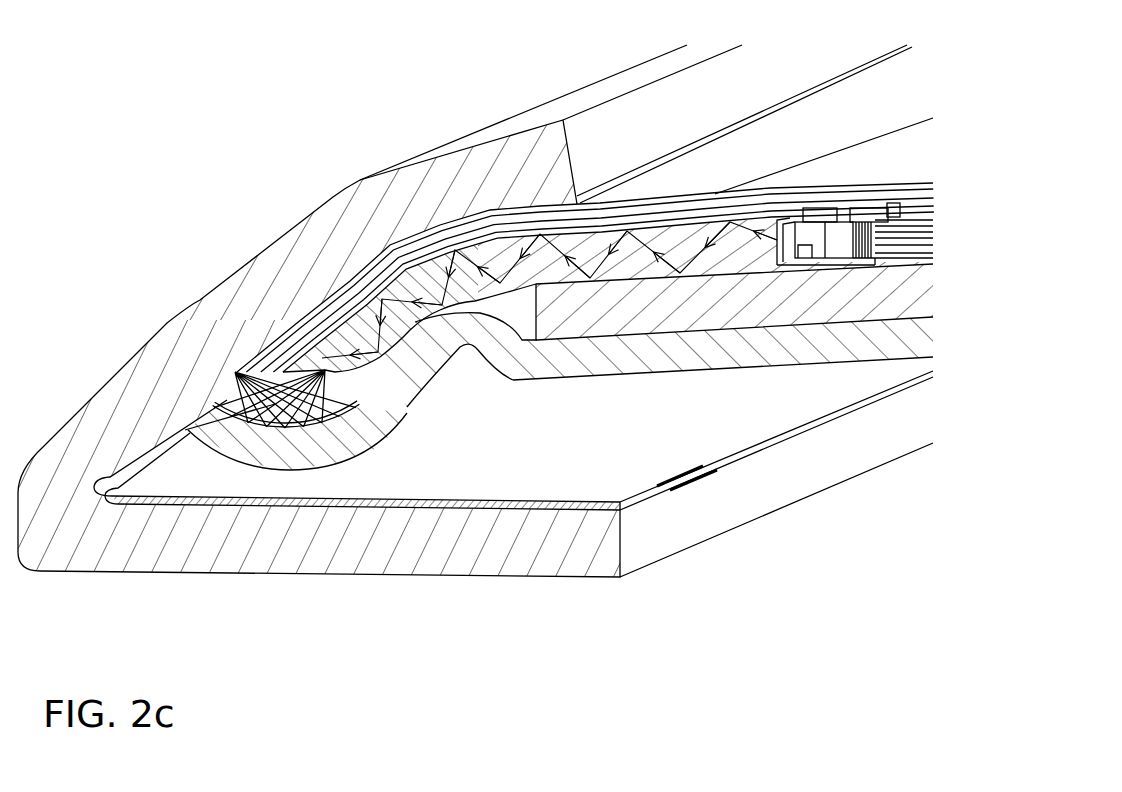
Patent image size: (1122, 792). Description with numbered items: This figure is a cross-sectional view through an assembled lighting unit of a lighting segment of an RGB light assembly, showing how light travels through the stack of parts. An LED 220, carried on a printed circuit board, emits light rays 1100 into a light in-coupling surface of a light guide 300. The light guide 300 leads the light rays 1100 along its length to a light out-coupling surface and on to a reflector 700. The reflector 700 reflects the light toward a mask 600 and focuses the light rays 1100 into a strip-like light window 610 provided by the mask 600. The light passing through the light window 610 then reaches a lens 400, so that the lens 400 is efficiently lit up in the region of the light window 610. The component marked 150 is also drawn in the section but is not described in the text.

The display panel 150 is at (600, 350).
The LED 220 is at (837, 238).
The light guide 300 is at (567, 248).
The lens 400 is at (313, 243).
The mask 600 is at (297, 323).
The light window 610 is at (235, 370).
The reflector 700 is at (225, 407).
The light rays 1100 is at (312, 401).